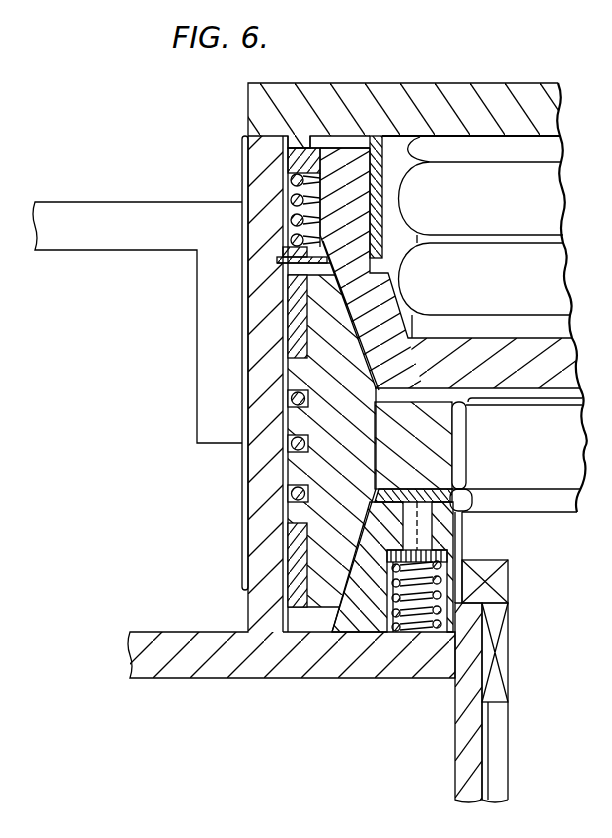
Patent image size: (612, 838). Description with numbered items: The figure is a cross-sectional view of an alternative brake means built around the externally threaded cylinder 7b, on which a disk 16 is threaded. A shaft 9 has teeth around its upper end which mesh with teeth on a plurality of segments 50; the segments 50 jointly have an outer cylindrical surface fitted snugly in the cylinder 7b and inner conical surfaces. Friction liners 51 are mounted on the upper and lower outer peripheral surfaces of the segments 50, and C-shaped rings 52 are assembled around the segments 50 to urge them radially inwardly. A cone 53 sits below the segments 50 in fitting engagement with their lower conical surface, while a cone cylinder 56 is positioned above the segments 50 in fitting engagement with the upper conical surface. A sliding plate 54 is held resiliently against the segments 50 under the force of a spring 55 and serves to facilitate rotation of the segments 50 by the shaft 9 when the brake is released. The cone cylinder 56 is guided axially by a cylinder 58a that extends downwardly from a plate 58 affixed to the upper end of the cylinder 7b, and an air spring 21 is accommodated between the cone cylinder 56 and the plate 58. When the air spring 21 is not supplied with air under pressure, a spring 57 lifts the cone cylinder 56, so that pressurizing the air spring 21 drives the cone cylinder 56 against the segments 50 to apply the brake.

The plate 58 is at (505, 83).
The cone cylinder 56 is at (330, 150).
The cylinder 58a is at (372, 196).
The air spring 21 is at (403, 173).
The cone 53 is at (358, 612).
The segments 50 is at (433, 457).
The sliding plate 54 is at (462, 500).
The externally threaded cylinder 7b is at (242, 512).
The disk 16 is at (100, 240).
The spring 57 is at (283, 222).
The friction liners 51 is at (292, 300).
The C-shaped rings 52 is at (308, 447).
The spring 55 is at (402, 638).
The shaft 9 is at (502, 750).